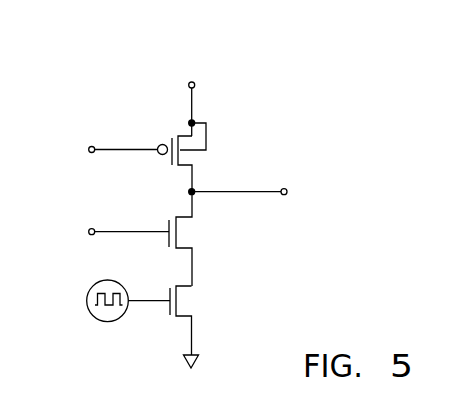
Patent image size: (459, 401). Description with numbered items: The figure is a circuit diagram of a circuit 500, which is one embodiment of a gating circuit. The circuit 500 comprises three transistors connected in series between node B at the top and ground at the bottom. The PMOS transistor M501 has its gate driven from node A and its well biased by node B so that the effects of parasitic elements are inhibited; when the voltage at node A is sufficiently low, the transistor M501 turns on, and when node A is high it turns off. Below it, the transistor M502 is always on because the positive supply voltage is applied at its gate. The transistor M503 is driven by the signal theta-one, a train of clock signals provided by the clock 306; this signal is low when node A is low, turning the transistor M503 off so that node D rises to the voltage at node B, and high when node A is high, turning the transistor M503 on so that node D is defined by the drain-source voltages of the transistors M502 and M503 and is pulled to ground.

The circuit 500 is at (280, 78).
The clock 306 is at (108, 322).
The PMOS transistor M501 is at (211, 157).
The transistor M502 is at (208, 239).
The transistor M503 is at (208, 320).